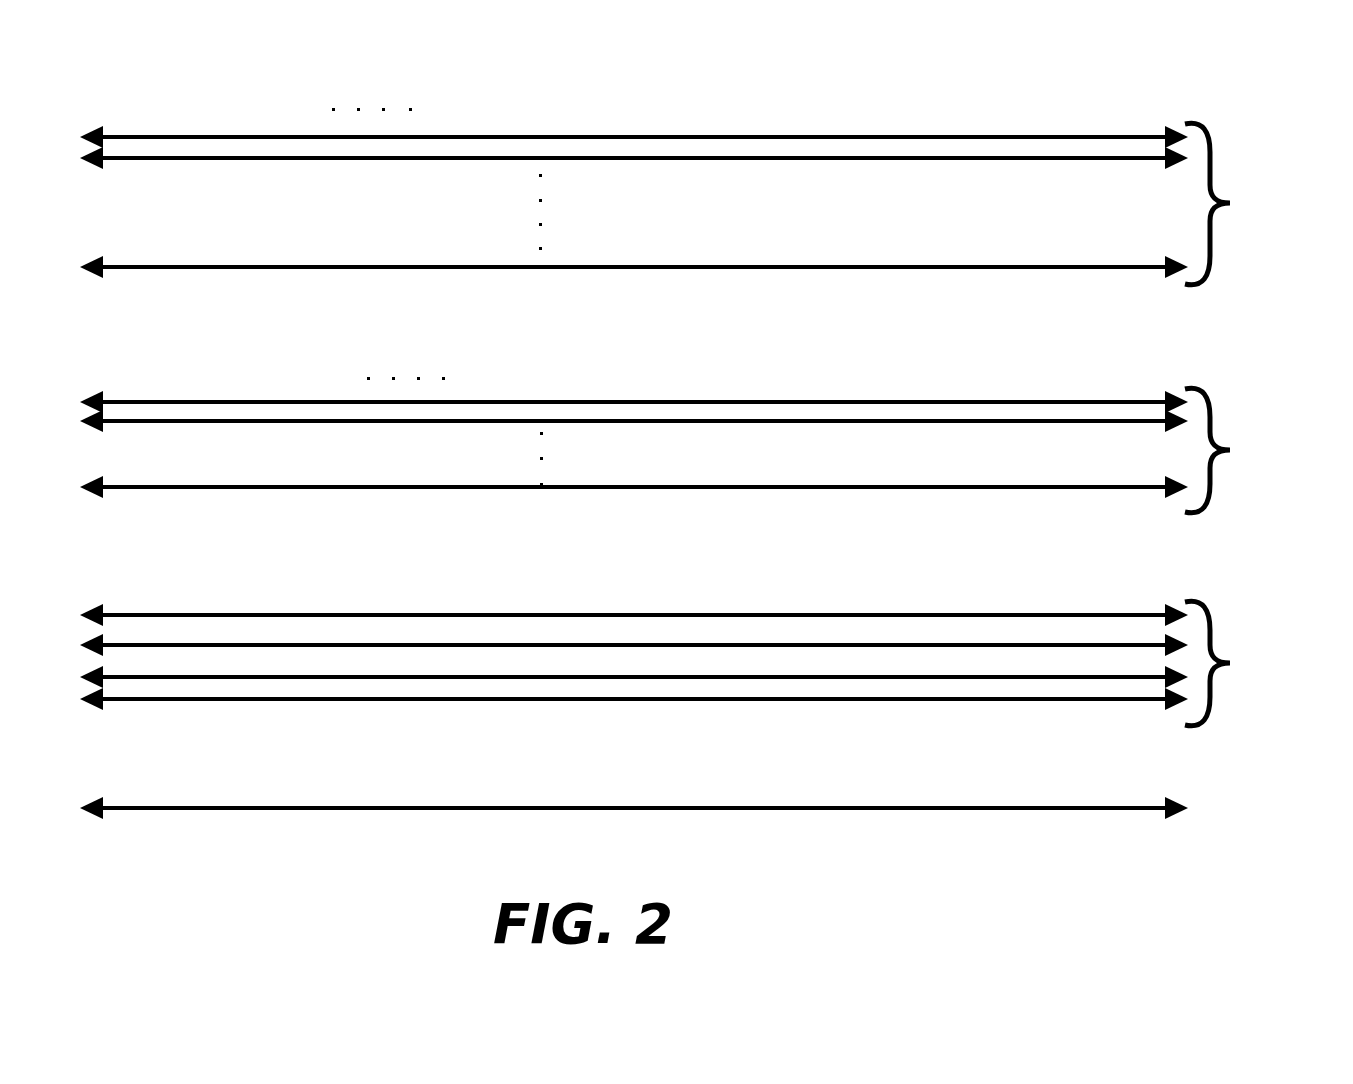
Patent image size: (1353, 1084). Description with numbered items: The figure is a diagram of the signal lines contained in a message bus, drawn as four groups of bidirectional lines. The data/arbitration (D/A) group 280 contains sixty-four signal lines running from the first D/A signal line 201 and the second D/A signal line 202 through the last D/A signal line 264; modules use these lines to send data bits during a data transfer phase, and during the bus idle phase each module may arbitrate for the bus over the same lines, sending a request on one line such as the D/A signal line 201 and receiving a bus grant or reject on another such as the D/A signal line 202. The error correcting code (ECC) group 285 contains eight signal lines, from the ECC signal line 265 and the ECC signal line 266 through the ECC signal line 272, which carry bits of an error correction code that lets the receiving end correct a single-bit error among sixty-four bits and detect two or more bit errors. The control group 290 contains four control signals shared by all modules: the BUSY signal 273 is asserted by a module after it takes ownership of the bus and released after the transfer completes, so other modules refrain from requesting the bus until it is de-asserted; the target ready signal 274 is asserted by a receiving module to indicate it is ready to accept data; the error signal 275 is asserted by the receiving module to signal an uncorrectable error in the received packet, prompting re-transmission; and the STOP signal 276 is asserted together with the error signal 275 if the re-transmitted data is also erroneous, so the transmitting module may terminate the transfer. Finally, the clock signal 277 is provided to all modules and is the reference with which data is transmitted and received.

The D/A201 signal line 201 is at (161, 136).
The D/A202 signal line 202 is at (243, 155).
The D/A264 signal line 264 is at (297, 265).
The ECC265 signal line 265 is at (269, 358).
The ECC266 signal line 266 is at (308, 420).
The ECC272 signal line 272 is at (364, 486).
The BUSY signal line 273 is at (425, 572).
The Target Ready (TRDY) signal line 274 is at (468, 644).
The Error (ERR) signal line 275 is at (590, 676).
The STOP signal line 276 is at (705, 698).
The CLK signal line 277 is at (731, 806).
The data/arbitration (D/A) group 280 is at (1221, 175).
The error correcting code (ECC) group 285 is at (1230, 440).
The control group 290 is at (1220, 631).